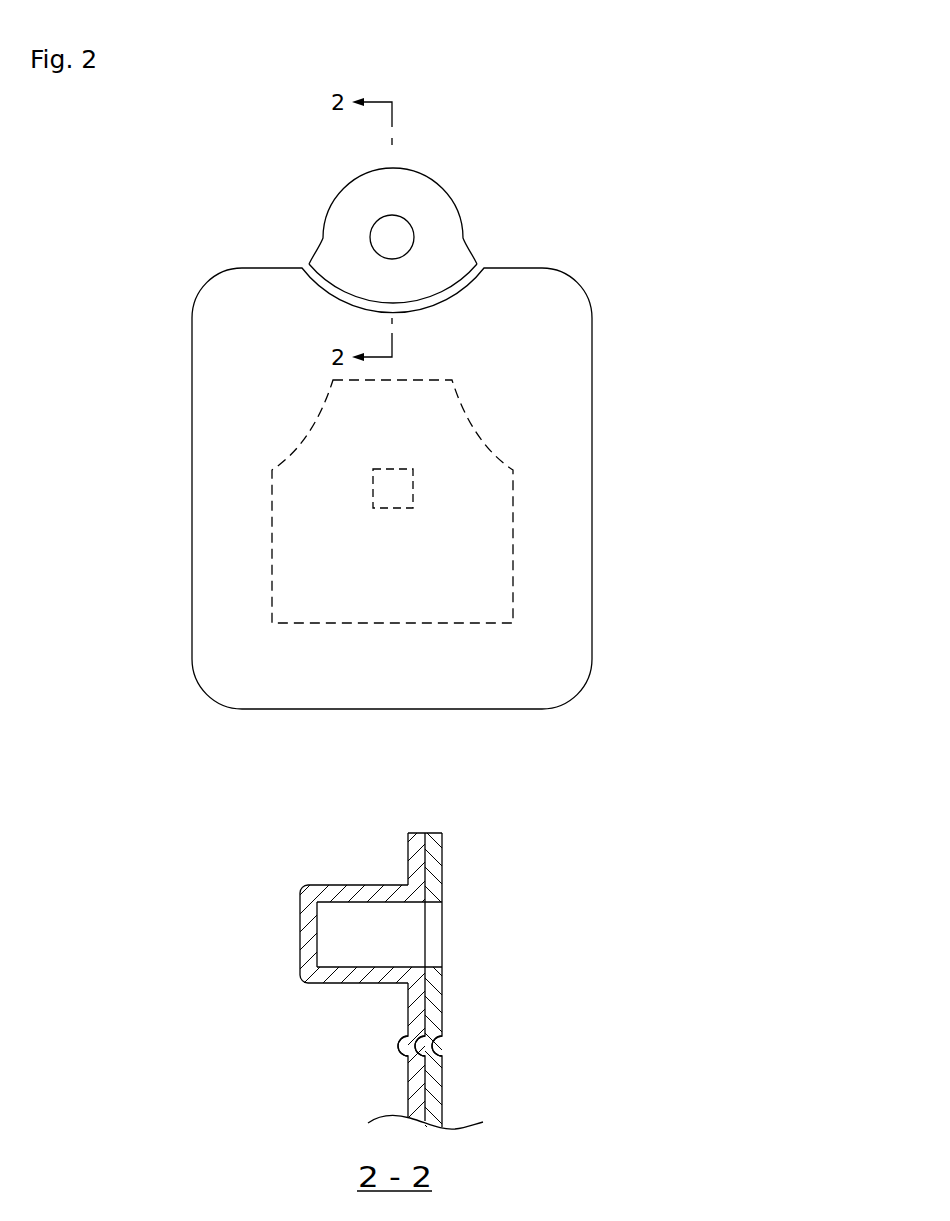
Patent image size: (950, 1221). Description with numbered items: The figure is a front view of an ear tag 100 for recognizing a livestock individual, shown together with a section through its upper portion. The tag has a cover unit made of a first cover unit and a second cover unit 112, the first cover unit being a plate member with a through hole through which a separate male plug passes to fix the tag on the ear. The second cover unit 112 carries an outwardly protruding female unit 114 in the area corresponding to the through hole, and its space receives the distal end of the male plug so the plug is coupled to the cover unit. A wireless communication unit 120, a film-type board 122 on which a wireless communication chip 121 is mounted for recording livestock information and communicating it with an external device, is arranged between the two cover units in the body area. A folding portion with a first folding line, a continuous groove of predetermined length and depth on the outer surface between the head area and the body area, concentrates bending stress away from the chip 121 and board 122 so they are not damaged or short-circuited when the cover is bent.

The ear tag 100 is at (632, 168).
The second cover unit 112 is at (418, 1090).
The female unit 114 is at (318, 888).
The wireless communication unit 120 is at (92, 498).
The wireless communication chip 121 is at (374, 488).
The board 122 is at (272, 573).